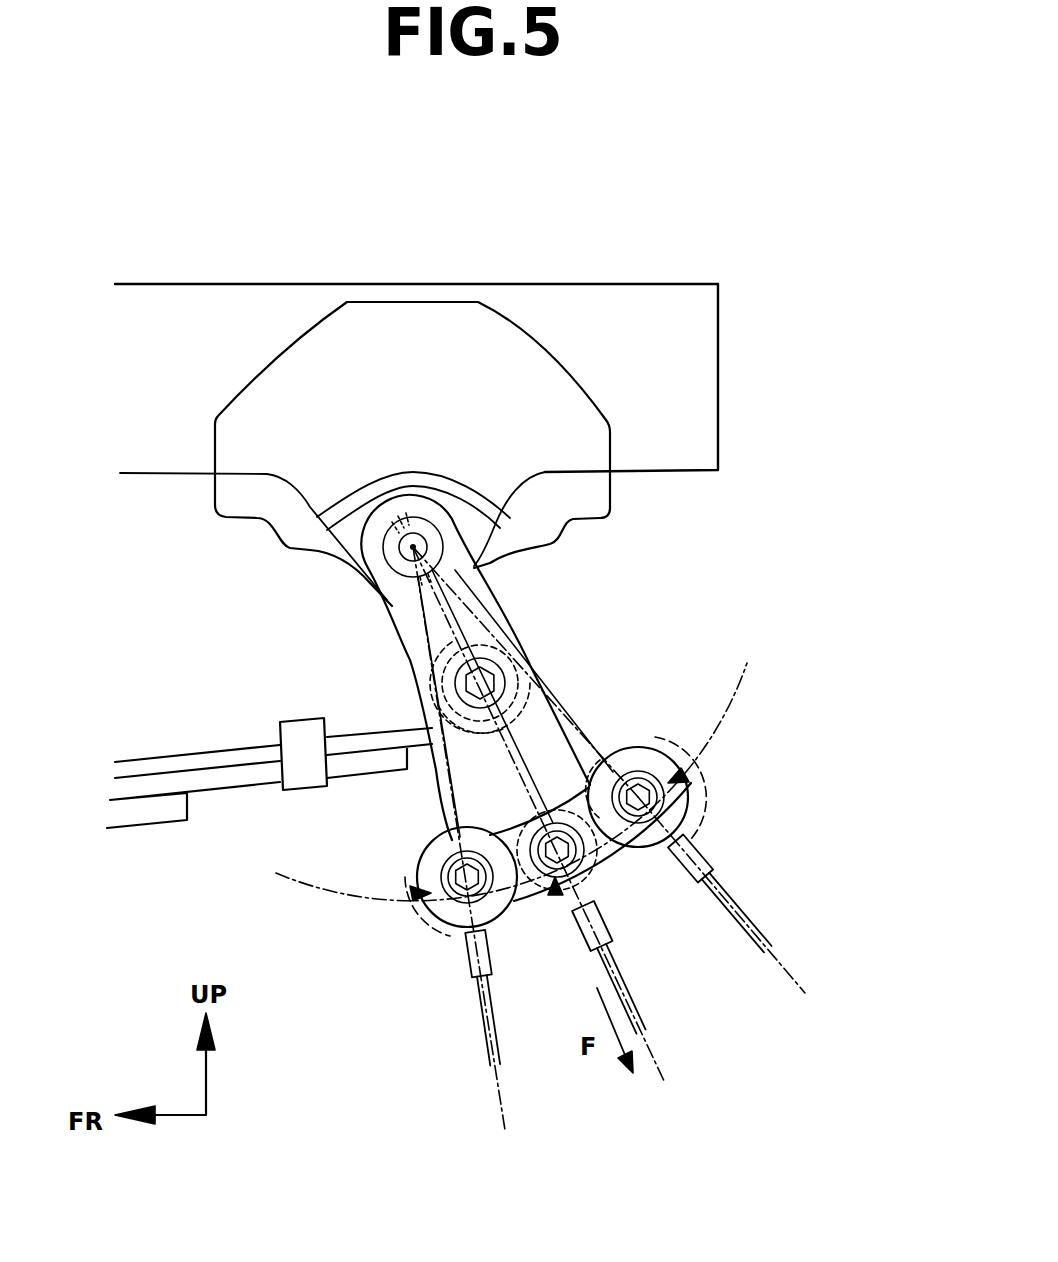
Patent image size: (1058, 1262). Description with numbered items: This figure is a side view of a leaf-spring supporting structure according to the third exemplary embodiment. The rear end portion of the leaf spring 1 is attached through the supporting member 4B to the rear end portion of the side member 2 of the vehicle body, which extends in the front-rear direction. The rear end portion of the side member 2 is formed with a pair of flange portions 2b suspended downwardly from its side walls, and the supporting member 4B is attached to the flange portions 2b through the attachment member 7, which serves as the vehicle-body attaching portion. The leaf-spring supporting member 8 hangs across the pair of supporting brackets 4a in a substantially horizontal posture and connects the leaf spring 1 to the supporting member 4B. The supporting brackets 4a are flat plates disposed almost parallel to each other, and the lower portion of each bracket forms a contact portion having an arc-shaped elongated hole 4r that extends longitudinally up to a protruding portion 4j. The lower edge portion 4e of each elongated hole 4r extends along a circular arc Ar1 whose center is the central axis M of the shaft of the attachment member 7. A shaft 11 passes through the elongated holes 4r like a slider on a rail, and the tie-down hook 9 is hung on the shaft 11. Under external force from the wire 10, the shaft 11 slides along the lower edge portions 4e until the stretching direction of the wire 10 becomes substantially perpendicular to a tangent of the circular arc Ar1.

The leaf spring 1 is at (218, 805).
The side member 2 is at (622, 278).
The flange portions 2b is at (270, 438).
The supporting member 4B is at (520, 586).
The supporting brackets 4a is at (540, 722).
The lower edge portion 4e is at (636, 864).
The protruding portion 4j is at (660, 750).
The elongated hole 4r is at (443, 866).
The attachment member 7 is at (372, 578).
The leaf-spring supporting member 8 is at (532, 651).
The tie-down hook 9 is at (470, 963).
The wire 10 is at (488, 1035).
The shaft 11 is at (412, 897).
The central axis M is at (414, 546).
The circular arc Ar1 is at (735, 722).